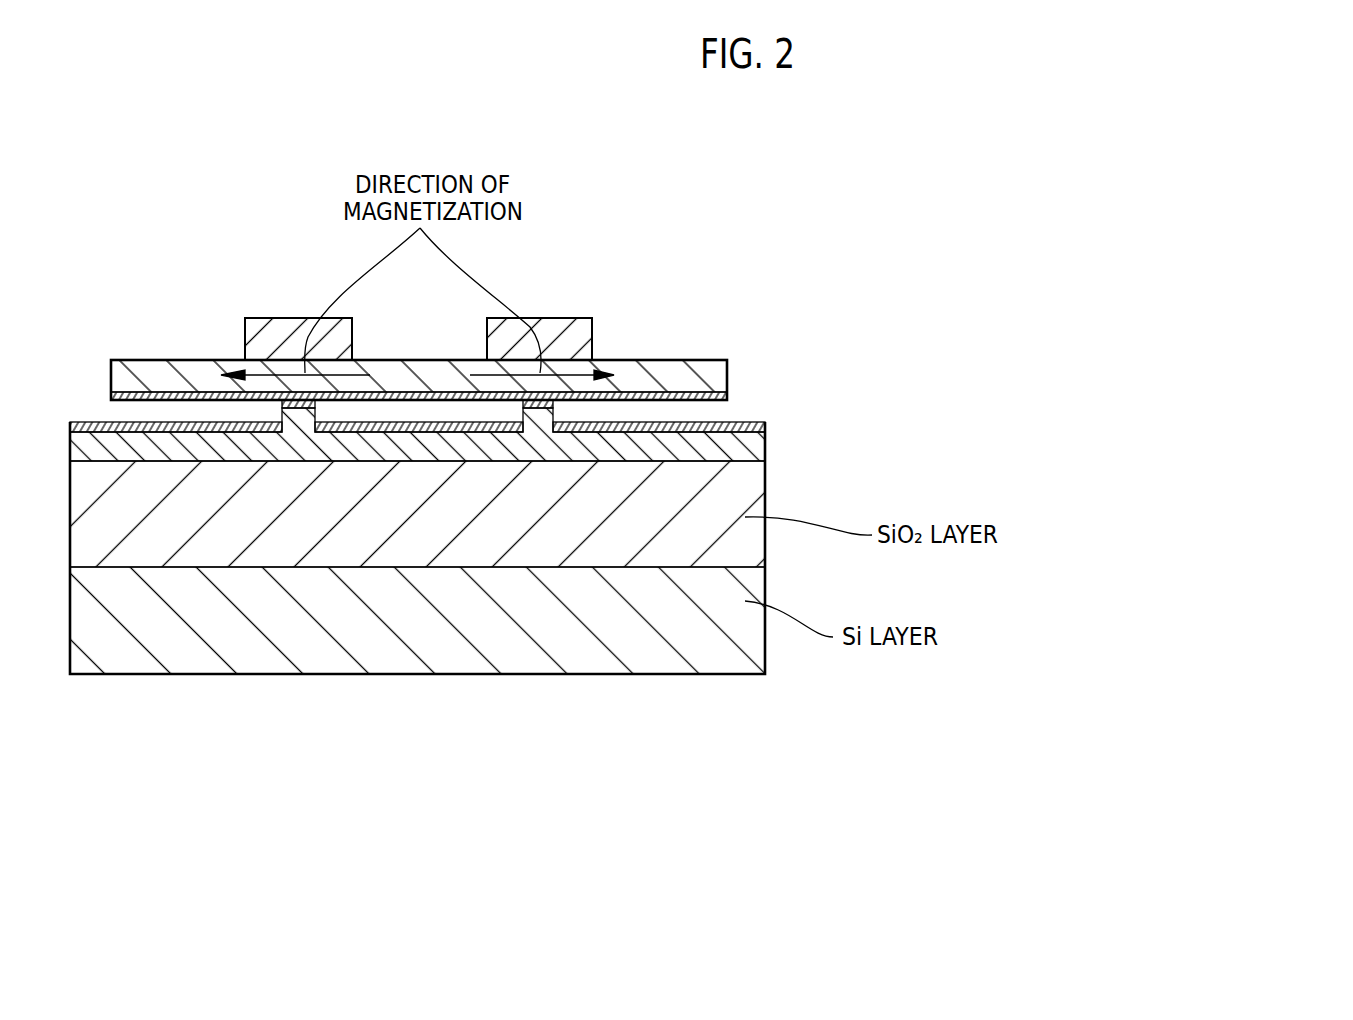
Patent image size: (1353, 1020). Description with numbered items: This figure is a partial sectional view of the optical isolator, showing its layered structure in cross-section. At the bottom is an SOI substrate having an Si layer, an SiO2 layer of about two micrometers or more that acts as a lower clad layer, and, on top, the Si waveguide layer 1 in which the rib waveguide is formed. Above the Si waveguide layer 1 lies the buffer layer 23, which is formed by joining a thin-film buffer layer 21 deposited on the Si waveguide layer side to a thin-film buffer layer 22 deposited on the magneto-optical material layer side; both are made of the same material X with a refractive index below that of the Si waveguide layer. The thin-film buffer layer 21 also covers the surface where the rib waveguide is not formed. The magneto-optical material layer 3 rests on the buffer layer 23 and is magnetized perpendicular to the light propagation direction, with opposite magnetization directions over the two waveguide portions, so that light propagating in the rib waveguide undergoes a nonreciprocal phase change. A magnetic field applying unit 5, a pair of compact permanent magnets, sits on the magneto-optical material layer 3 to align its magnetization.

The Si waveguide layer 1 is at (745, 443).
The magneto-optical material layer 3 is at (797, 306).
The magnetic field applying unit 5 is at (667, 245).
The thin-film buffer layer 21 is at (553, 403).
The thin-film buffer layer 22 is at (727, 401).
The buffer layer 23 is at (707, 389).